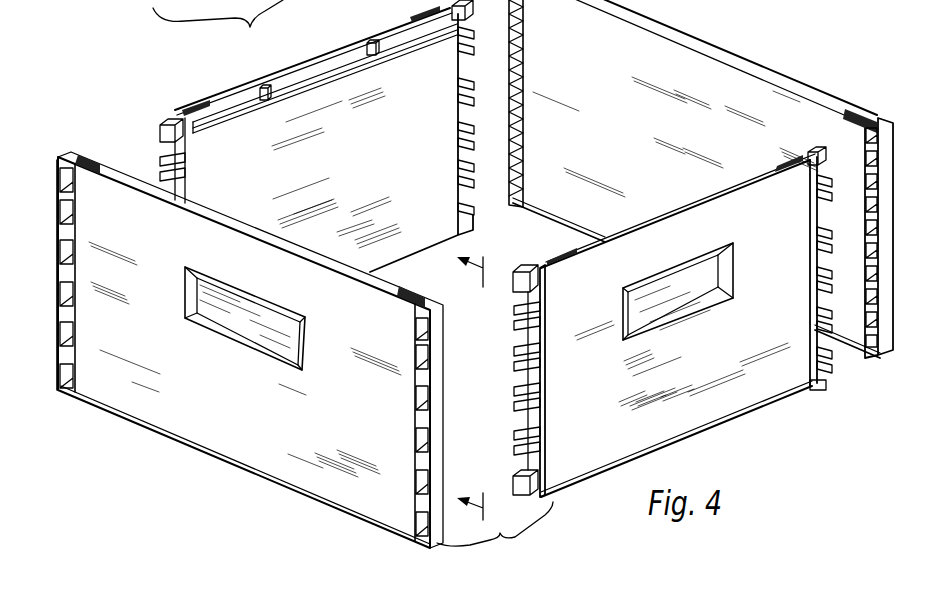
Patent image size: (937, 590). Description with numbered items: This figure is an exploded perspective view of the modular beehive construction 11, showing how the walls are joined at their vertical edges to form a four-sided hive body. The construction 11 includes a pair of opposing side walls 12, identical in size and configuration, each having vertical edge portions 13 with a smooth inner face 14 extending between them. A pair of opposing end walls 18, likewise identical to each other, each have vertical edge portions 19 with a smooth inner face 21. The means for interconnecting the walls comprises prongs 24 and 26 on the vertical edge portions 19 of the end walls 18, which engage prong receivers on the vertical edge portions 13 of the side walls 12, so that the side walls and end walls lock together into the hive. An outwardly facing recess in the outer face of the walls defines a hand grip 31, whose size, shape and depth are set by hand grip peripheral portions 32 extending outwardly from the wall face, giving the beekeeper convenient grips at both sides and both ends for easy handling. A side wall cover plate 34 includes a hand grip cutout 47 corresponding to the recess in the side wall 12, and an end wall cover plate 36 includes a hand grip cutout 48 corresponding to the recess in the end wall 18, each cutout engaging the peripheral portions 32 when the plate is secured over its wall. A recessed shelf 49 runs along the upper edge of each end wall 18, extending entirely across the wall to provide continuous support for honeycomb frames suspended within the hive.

The modular beehive construction 11 is at (474, 335).
The side wall 12 is at (126, 165).
The vertical edge portion 13 is at (58, 182).
The inner face 14 is at (618, 20).
The end wall 18 is at (460, 244).
The vertical edge portion 19 is at (183, 152).
The inner face 21 is at (316, 78).
The prong 24 is at (160, 130).
The prong 26 is at (468, 82).
The hand grip 31 is at (655, 287).
The hand grip peripheral portion 32 is at (224, 329).
The side wall cover plate 34 is at (245, 384).
The end wall cover plate 36 is at (678, 325).
The hand grip cutout 47 is at (212, 333).
The hand grip cutout 48 is at (623, 312).
The recessed shelf 49 is at (250, 108).